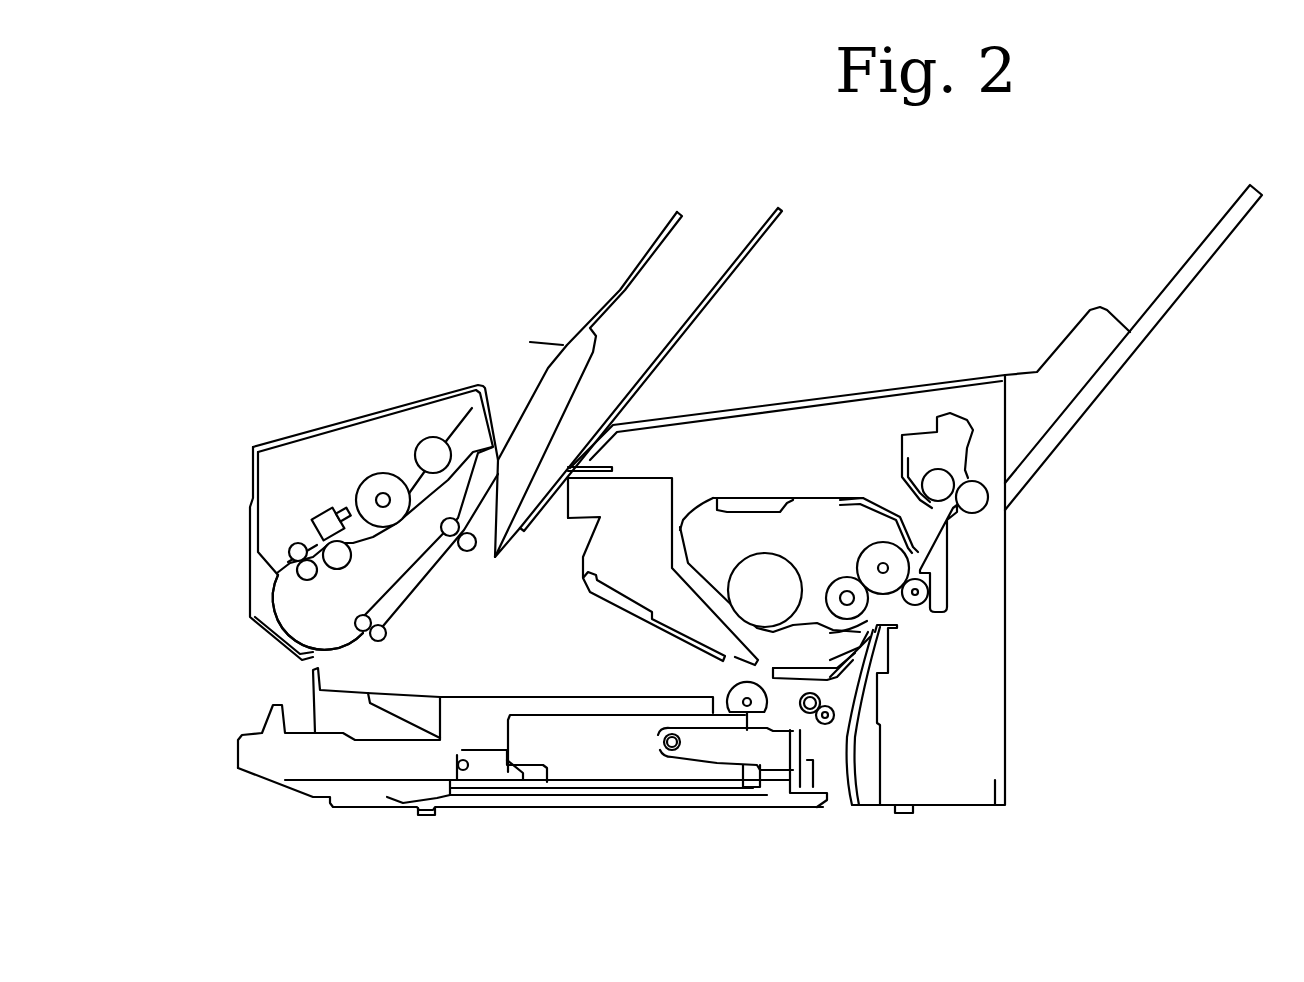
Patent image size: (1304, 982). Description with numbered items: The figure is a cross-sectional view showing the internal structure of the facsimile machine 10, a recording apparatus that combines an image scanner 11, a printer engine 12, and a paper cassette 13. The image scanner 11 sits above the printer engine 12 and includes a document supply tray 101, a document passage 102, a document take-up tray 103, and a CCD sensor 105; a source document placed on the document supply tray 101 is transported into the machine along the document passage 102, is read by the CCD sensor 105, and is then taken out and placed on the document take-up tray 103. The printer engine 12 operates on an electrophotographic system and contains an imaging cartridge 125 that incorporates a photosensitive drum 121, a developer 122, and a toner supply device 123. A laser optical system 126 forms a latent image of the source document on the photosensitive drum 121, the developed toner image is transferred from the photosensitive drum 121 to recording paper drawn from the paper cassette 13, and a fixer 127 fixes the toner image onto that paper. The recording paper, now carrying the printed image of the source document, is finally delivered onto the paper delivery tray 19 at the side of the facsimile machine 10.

The facsimile machine 10 is at (1046, 608).
The image scanner 11 is at (434, 378).
The printer engine 12 is at (933, 700).
The paper cassette 13 is at (557, 708).
The paper delivery tray 19 is at (1212, 258).
The document supply tray 101 is at (628, 267).
The document passage 102 is at (280, 607).
The document take-up tray 103 is at (730, 267).
The CCD sensor 105 is at (322, 510).
The photosensitive drum 121 is at (890, 563).
The developer 122 is at (833, 588).
The toner supply device 123 is at (765, 567).
The imaging cartridge 125 is at (840, 498).
The laser optical system 126 is at (652, 477).
The fixer 127 is at (917, 428).